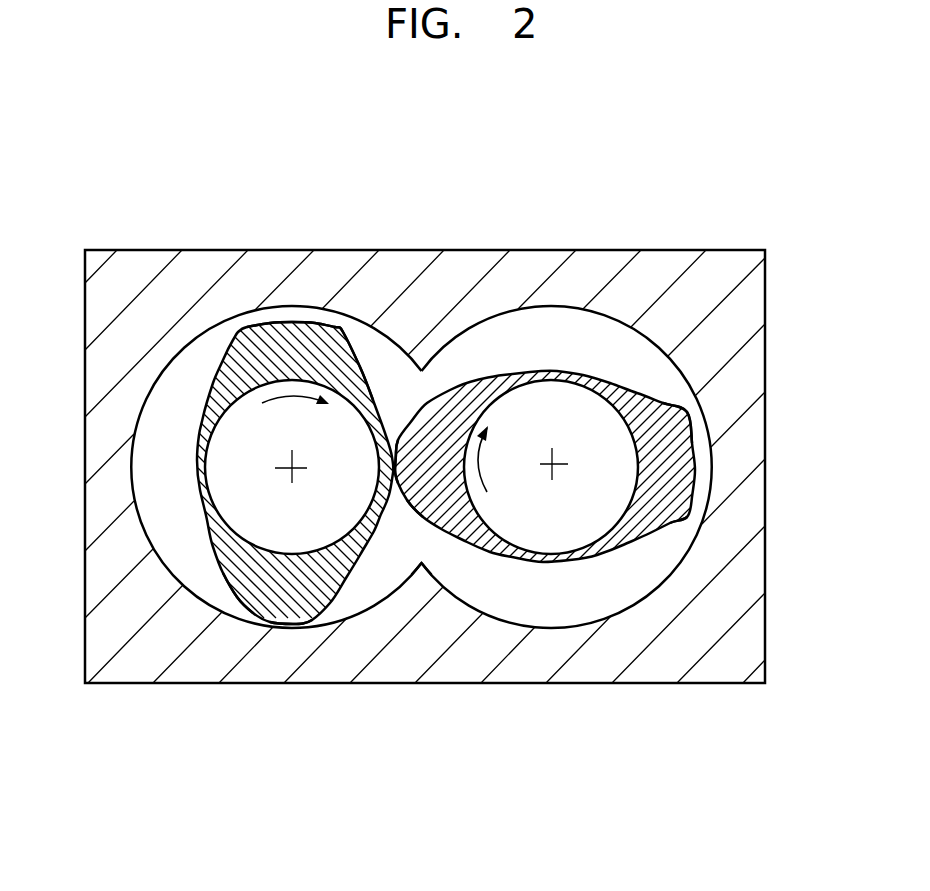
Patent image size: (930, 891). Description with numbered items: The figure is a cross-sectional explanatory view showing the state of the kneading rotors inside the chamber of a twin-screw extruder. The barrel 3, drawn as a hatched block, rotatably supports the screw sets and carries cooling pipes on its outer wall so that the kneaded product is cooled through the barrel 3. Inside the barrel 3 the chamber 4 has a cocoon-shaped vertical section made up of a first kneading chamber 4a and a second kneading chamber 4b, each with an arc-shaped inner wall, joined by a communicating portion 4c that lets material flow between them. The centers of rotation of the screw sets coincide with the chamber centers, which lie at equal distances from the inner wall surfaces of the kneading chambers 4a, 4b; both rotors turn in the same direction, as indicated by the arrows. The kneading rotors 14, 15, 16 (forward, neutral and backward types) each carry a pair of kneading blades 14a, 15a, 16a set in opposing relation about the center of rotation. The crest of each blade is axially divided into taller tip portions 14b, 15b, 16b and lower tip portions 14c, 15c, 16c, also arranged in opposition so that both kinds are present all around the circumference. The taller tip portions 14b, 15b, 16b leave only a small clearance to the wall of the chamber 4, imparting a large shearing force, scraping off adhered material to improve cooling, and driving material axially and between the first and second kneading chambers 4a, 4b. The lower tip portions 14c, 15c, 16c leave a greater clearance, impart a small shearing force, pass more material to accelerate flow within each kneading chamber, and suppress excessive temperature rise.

The barrel 3 is at (722, 660).
The chamber 4 is at (421, 541).
The first kneading chamber 4a is at (363, 588).
The second kneading chamber 4b is at (448, 573).
The communicating portion 4c is at (413, 550).
The forward type kneading rotor 14 is at (453, 485).
The neutral type kneading rotor 15 is at (453, 485).
The backward type kneading rotor 16 is at (453, 485).
The kneading blade 14a is at (387, 465).
The kneading blade 15a is at (387, 465).
The kneading blade 16a is at (288, 363).
The taller tip portion 14b is at (321, 625).
The taller tip portion 15b is at (321, 625).
The taller tip portion 16b is at (395, 465).
The lower tip portion 14c is at (536, 325).
The lower tip portion 15c is at (536, 325).
The lower tip portion 16c is at (295, 322).